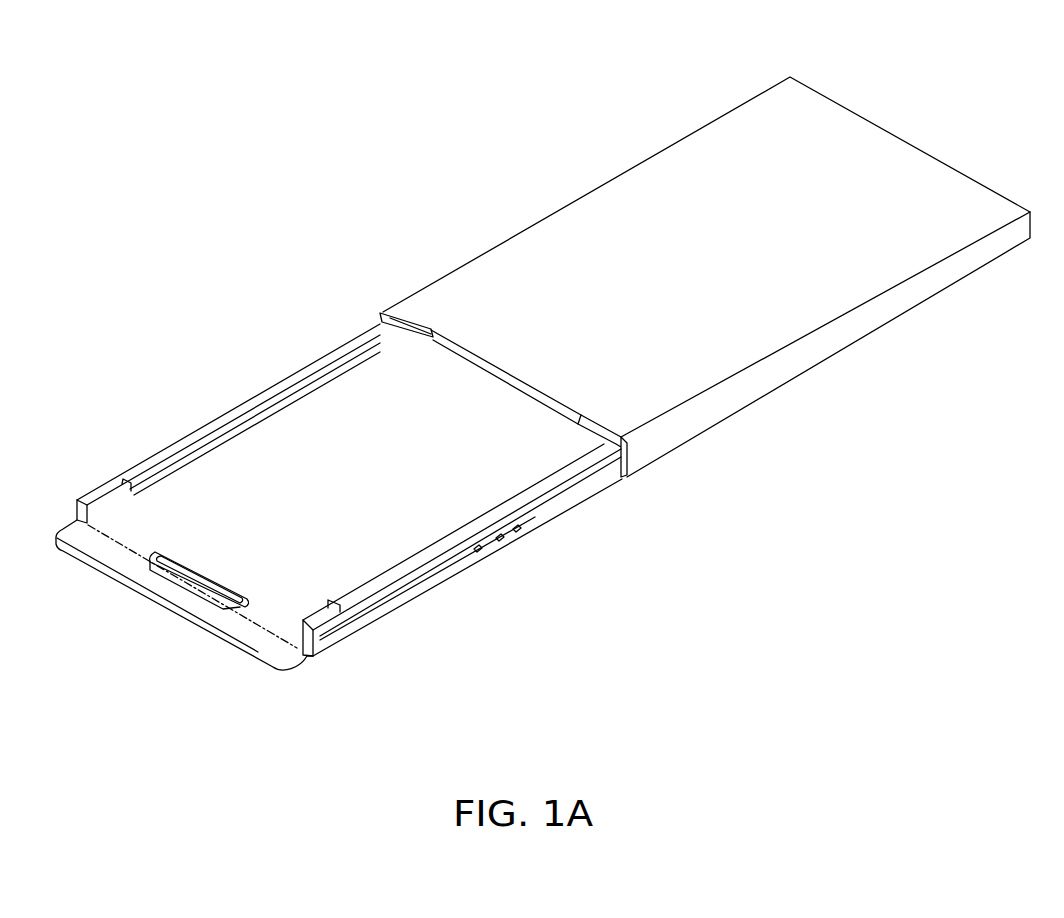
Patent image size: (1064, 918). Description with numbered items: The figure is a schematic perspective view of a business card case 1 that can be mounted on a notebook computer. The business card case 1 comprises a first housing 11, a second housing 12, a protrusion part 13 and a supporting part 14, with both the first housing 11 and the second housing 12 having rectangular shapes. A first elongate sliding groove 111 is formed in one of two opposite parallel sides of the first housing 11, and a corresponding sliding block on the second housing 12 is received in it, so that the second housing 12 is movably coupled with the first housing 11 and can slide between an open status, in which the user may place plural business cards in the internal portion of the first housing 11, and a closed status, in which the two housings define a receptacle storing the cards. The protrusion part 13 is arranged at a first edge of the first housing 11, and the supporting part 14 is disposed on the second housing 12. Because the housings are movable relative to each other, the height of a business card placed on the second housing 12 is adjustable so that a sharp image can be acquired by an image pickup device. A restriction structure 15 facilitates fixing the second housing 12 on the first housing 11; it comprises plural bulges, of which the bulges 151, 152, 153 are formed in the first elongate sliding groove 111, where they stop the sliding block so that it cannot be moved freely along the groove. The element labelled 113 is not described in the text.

The business card case 1 is at (58, 103).
The first housing 11 is at (328, 418).
The first elongate sliding groove 111 is at (385, 598).
The tab 113 is at (190, 574).
The second housing 12 is at (874, 153).
The protrusion part 13 is at (250, 640).
The supporting part 14 is at (421, 316).
The restriction structure 15 is at (482, 518).
The bulge 151 is at (478, 550).
The bulge 152 is at (503, 538).
The bulge 153 is at (520, 527).